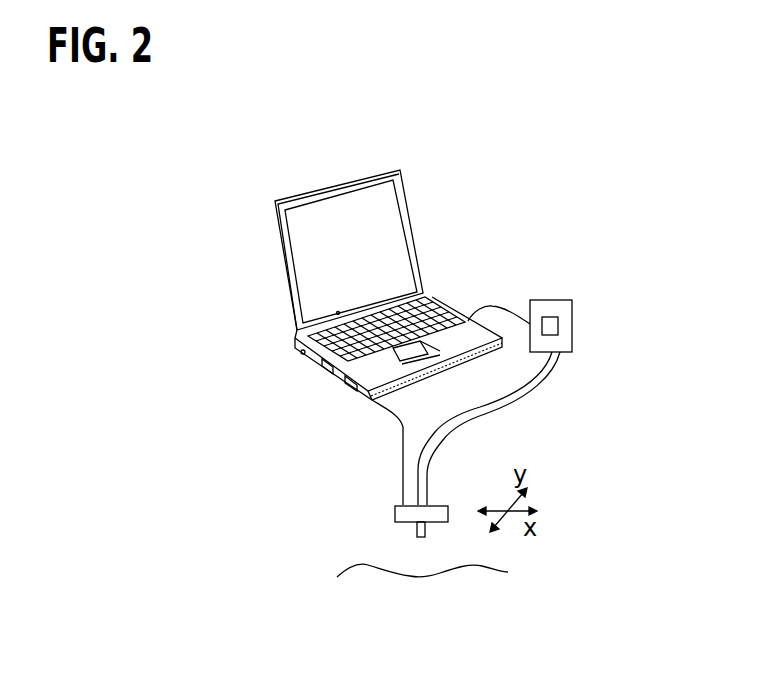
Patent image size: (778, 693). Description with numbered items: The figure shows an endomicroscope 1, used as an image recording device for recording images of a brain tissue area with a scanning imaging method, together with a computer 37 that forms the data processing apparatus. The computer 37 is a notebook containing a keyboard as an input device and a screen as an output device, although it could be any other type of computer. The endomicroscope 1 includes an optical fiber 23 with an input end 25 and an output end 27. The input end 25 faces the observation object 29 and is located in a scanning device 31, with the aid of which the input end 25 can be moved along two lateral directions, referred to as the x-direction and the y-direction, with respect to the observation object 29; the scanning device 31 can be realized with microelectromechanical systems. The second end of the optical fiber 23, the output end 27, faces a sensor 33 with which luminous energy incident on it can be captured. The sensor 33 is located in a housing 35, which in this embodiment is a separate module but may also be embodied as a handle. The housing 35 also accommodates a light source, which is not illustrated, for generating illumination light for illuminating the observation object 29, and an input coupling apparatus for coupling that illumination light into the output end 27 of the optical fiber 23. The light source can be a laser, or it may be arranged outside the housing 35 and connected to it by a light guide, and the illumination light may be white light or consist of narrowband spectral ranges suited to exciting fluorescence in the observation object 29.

The endomicroscope 1 is at (600, 443).
The optical fiber 23 is at (523, 400).
The input end 25 is at (420, 545).
The output end 27 is at (572, 346).
The observation object 29 is at (360, 565).
The scanning device 31 is at (392, 513).
The sensor 33 is at (572, 325).
The housing 35 is at (547, 298).
The computer 37 is at (328, 151).